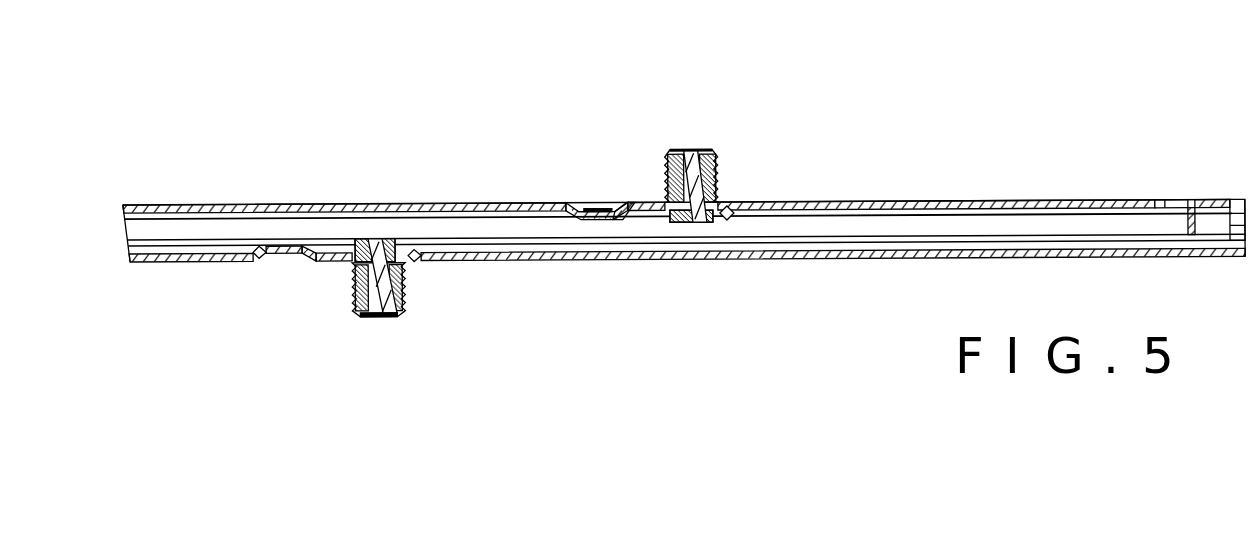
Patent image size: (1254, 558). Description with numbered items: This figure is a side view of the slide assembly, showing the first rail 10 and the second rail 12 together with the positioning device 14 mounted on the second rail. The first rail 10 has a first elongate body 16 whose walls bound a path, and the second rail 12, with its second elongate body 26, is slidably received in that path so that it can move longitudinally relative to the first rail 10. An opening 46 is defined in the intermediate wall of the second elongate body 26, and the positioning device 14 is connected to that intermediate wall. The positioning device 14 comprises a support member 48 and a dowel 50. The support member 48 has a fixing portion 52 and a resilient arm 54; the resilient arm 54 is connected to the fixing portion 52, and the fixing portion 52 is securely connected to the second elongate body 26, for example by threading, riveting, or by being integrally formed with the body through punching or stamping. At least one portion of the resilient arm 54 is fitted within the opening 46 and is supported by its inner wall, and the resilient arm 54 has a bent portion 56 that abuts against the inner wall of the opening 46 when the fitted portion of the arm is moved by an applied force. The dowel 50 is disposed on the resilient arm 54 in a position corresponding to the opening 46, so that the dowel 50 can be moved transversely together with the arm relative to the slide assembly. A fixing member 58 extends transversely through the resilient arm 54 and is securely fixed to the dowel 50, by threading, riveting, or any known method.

The first rail 10 is at (832, 266).
The second rail 12 is at (917, 199).
The positioning device 14 is at (486, 205).
The first elongate body 16 is at (768, 262).
The second elongate body 26 is at (832, 203).
The opening 46 is at (647, 213).
The support member 48 is at (443, 221).
The dowel 50 is at (525, 225).
The fixing portion 52 is at (572, 205).
The resilient arm 54 is at (647, 207).
The bent portion 56 is at (595, 222).
The fixing member 58 is at (688, 147).